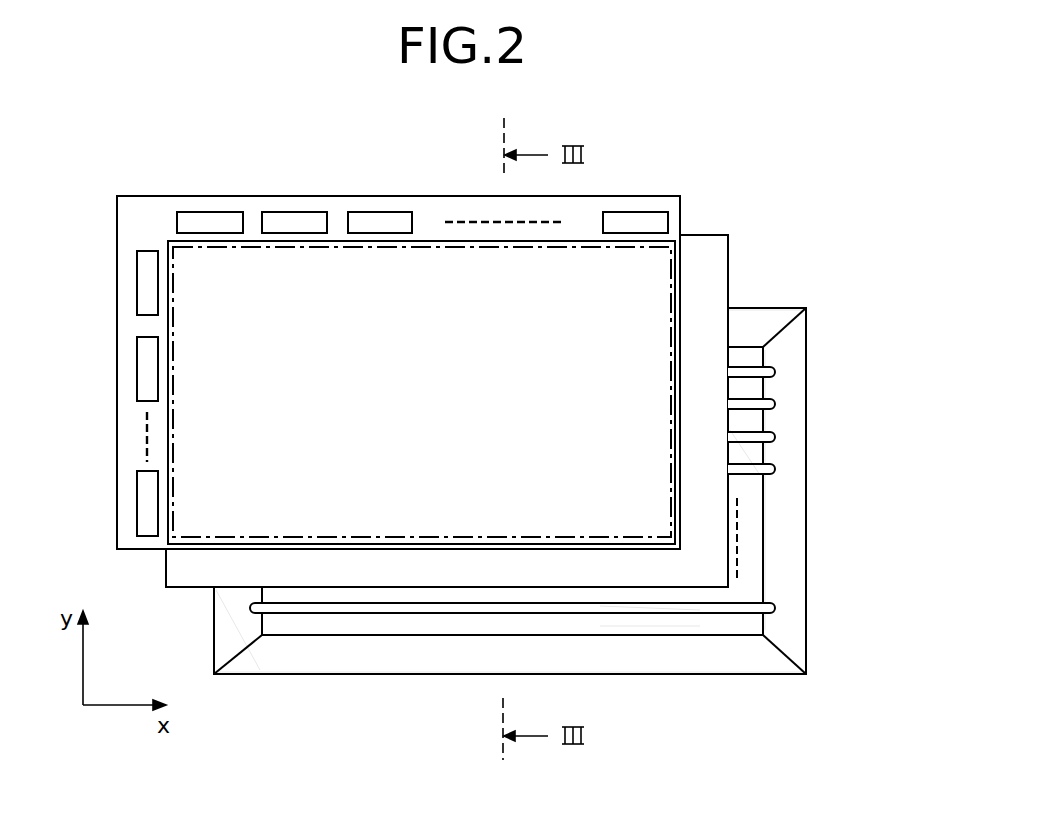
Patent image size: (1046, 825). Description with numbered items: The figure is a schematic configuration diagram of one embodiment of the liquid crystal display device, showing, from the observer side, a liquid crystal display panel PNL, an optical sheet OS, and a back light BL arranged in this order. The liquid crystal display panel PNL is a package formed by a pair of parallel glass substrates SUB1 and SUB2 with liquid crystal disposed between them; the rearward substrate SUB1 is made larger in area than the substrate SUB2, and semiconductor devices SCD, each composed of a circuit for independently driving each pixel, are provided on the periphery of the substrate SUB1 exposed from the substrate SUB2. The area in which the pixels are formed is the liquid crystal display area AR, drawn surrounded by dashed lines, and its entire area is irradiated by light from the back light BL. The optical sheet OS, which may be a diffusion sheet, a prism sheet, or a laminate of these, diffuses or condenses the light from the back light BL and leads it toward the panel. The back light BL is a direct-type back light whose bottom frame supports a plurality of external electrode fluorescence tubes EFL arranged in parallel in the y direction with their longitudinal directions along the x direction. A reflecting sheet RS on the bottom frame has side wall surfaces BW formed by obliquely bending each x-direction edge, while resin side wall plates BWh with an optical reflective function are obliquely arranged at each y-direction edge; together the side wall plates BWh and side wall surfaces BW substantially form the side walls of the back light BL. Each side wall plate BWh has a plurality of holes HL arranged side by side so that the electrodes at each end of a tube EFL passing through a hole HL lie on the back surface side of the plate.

The liquid crystal display panel PNL is at (233, 190).
The semiconductor device SCD is at (384, 218).
The substrate SUB1 is at (117, 277).
The substrate SUB2 is at (167, 445).
The liquid crystal display area AR is at (421, 392).
The optical sheet OS is at (705, 260).
The back light BL is at (812, 507).
The side wall surface BW is at (752, 328).
The side wall plate BWh is at (785, 552).
The hole HL is at (765, 365).
The external electrode fluorescence tube EFL is at (745, 470).
The reflecting sheet RS is at (650, 625).